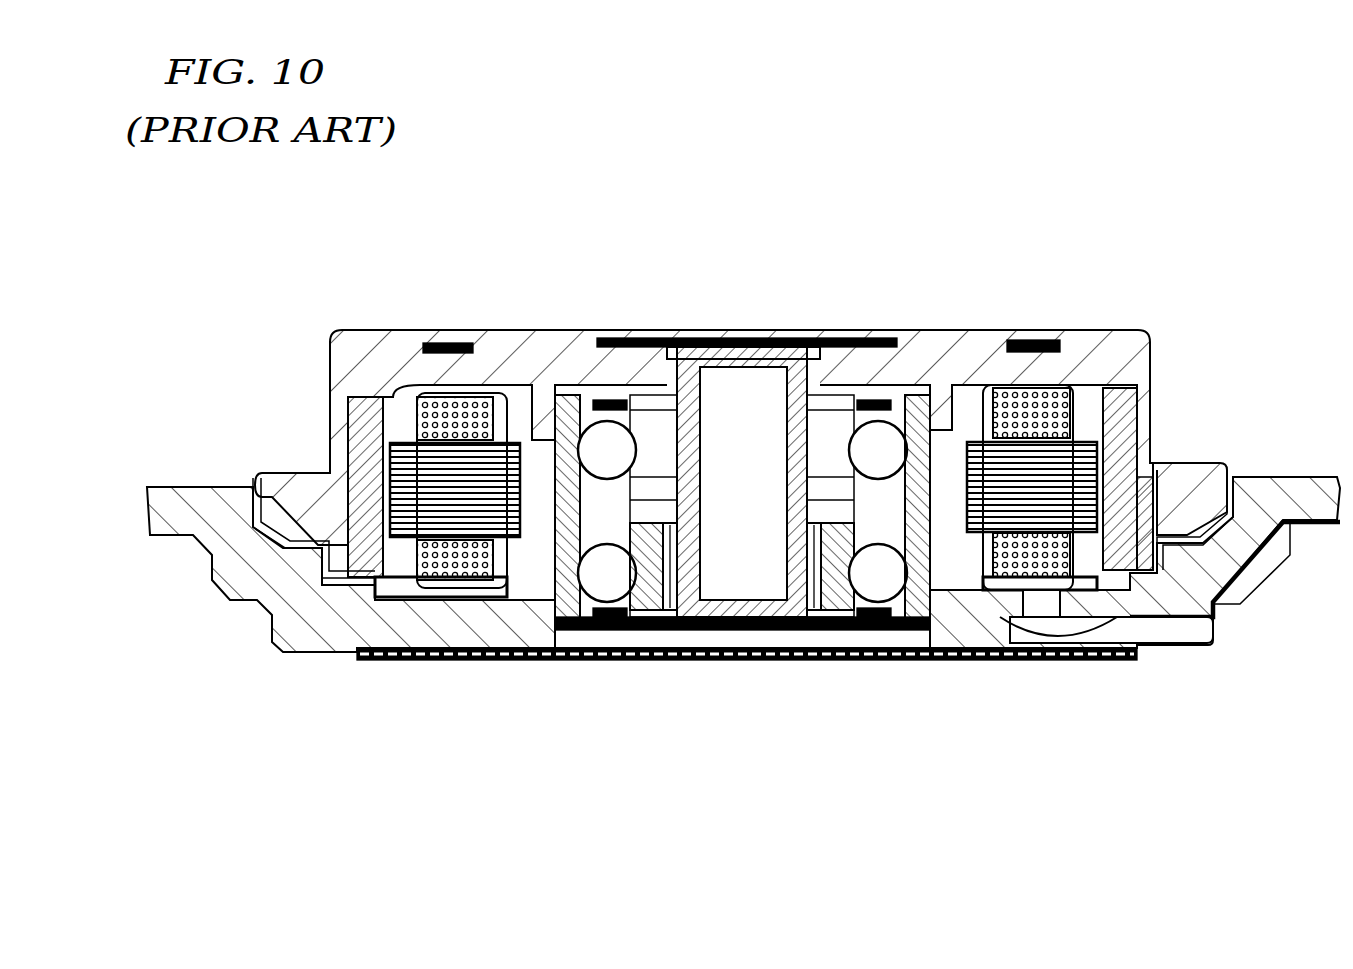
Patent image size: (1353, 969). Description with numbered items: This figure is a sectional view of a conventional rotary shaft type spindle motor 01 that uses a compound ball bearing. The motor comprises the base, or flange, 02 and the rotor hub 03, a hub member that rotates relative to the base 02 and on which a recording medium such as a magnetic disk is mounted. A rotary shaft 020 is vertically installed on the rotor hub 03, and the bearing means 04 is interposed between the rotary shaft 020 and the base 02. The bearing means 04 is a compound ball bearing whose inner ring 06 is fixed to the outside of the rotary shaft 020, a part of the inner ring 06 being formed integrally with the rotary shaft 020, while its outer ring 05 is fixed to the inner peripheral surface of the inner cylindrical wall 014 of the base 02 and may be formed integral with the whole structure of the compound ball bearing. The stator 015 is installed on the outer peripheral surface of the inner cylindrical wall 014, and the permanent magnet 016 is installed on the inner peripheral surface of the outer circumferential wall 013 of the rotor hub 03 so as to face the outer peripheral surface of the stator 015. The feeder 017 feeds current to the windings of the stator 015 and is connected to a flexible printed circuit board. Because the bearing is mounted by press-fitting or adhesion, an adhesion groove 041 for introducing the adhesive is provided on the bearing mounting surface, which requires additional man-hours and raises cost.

The spindle motor 01 is at (876, 212).
The base 02 is at (775, 690).
The rotor hub 03 is at (366, 318).
The bearing means 04 is at (605, 392).
The adhesion groove 041 is at (932, 405).
The outer ring 05 is at (565, 627).
The inner ring 06 is at (651, 627).
The outer circumferential wall 013 is at (330, 515).
The inner cylindrical wall 014 is at (949, 562).
The stator 015 is at (452, 590).
The permanent magnet 016 is at (369, 580).
The feeder 017 is at (1090, 630).
The rotary shaft 020 is at (766, 356).